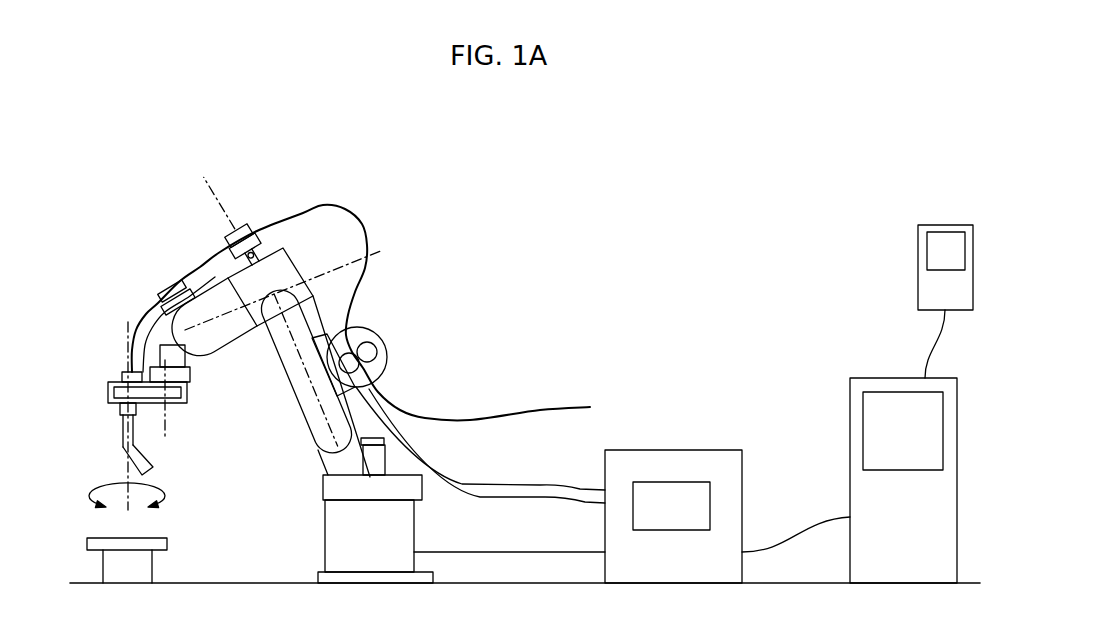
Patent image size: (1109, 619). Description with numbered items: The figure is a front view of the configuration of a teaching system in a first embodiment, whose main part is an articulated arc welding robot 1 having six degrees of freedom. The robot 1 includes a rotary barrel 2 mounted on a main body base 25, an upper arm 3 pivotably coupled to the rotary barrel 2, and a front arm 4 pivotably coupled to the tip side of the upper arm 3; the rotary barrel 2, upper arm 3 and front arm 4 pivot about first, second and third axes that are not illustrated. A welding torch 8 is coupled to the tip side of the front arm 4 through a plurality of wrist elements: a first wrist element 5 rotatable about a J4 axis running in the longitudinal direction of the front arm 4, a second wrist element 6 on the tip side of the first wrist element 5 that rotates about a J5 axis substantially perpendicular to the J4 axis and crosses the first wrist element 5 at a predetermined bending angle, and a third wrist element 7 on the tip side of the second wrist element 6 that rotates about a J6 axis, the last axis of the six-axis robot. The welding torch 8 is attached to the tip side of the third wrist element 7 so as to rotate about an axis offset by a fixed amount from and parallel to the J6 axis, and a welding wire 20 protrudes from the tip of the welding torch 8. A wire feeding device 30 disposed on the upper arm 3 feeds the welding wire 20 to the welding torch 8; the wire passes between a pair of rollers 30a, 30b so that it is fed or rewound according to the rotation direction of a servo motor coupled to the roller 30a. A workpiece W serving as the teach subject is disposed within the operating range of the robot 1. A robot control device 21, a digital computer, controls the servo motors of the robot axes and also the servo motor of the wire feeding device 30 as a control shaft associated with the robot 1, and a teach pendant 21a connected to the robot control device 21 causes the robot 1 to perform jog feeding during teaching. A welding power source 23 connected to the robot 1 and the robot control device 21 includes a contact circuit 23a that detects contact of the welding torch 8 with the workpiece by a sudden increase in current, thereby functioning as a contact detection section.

The robot 1 is at (542, 251).
The rotary barrel 2 is at (337, 487).
The upper arm 3 is at (317, 421).
The front arm 4 is at (292, 272).
The first wrist element 5 is at (203, 334).
The second wrist element 6 is at (183, 377).
The third wrist element 7 is at (181, 405).
The welding torch 8 is at (120, 432).
The welding wire 20 is at (297, 200).
The robot control device 21 is at (897, 418).
The teach pendant 21a is at (935, 290).
The welding power source 23 is at (693, 460).
The contact circuit 23a is at (655, 497).
The main body base 25 is at (337, 531).
The wire feeding device 30 is at (357, 332).
The roller 30a is at (372, 353).
The roller 30b is at (362, 367).
The J4 axis J4 is at (385, 252).
The J5 axis J5 is at (134, 322).
The J6 axis J6 is at (166, 436).
The workpiece W is at (152, 537).